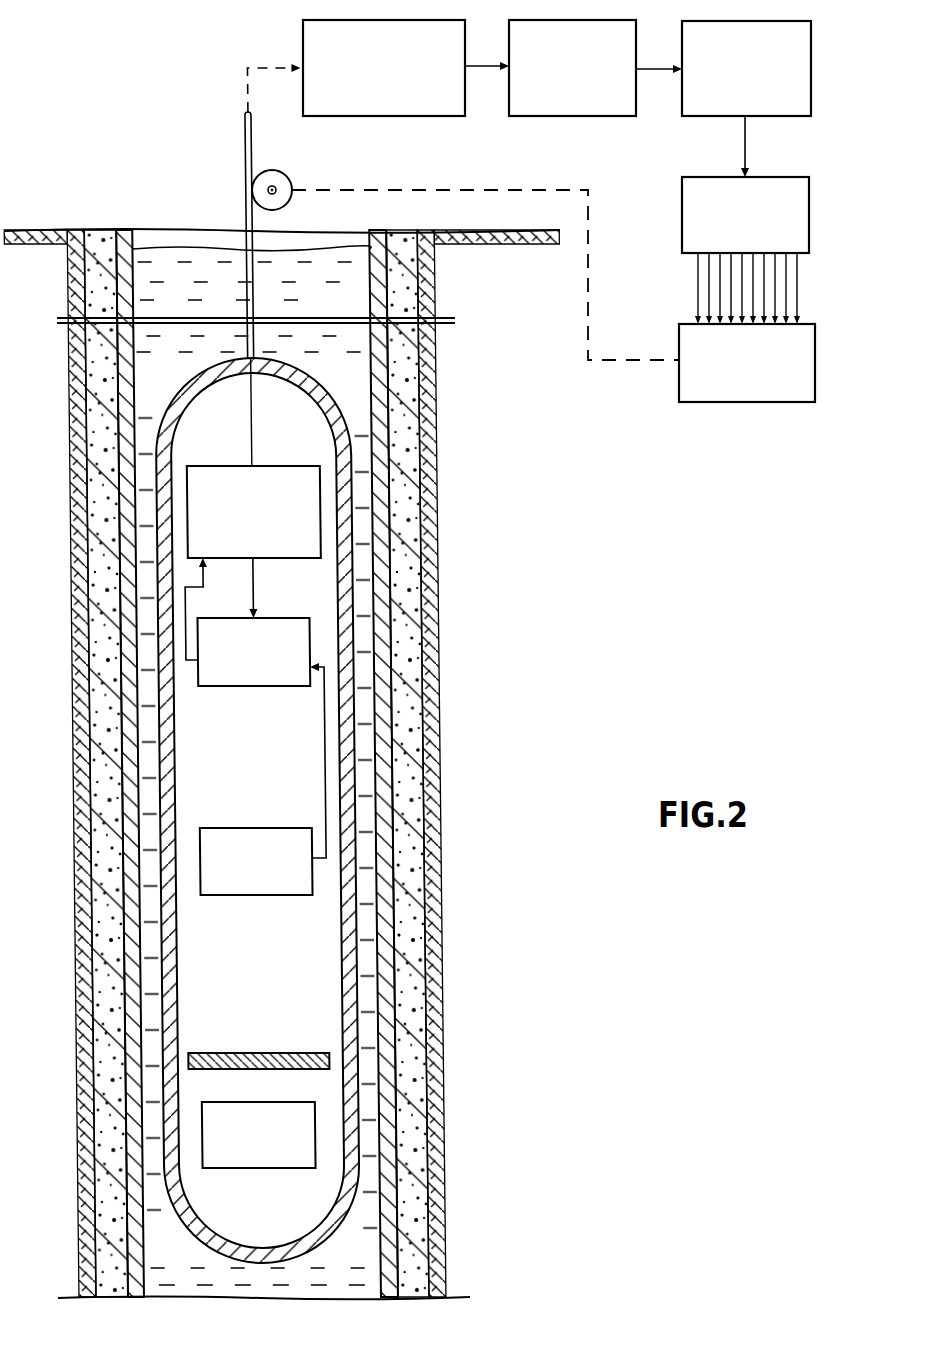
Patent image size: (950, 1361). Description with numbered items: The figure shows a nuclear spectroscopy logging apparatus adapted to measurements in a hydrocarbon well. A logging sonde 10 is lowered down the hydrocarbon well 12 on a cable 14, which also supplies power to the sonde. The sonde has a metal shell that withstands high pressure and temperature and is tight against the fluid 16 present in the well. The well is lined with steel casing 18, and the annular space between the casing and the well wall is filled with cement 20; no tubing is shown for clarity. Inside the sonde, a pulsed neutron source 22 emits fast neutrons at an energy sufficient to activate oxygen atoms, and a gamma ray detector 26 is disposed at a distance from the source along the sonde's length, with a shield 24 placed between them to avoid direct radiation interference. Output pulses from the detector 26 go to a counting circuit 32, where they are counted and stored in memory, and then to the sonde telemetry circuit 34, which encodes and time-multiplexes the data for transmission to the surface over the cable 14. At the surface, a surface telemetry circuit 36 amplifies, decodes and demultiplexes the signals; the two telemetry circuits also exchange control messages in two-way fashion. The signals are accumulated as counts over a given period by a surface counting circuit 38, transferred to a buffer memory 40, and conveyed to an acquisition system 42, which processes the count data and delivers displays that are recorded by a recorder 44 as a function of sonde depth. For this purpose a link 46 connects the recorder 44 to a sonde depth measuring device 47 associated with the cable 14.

The logging sonde 10 is at (340, 400).
The hydrocarbon well 12 is at (200, 220).
The cable 14 is at (246, 138).
The fluid 16 is at (323, 297).
The steel casing 18 is at (378, 441).
The cement 20 is at (400, 485).
The neutron source 22 is at (315, 1143).
The shield 24 is at (329, 1058).
The gamma ray detector 26 is at (312, 878).
The counting circuit 32 is at (310, 643).
The sonde telemetry circuit 34 is at (320, 530).
The surface telemetry circuit 36 is at (410, 116).
The surface counting circuit 38 is at (568, 116).
The buffer memory 40 is at (811, 72).
The acquisition system 42 is at (809, 212).
The recorder 44 is at (815, 360).
The link 46 is at (588, 240).
The sonde depth measuring device 47 is at (276, 186).